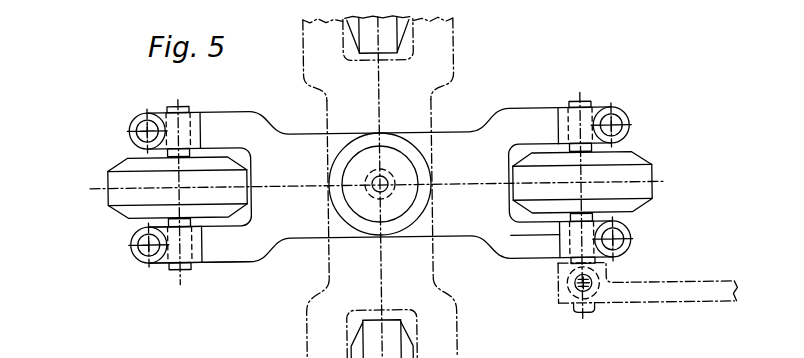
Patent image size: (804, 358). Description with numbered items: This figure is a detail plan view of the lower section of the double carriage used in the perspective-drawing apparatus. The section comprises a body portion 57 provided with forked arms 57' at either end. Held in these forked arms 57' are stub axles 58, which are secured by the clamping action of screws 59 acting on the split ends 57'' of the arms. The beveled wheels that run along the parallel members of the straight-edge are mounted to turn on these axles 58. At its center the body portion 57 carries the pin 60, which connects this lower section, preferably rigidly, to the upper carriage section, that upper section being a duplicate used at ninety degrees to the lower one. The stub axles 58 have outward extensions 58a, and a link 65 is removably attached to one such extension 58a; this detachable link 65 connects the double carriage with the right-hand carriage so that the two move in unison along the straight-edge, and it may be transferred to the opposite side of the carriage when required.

The body portion 57 is at (390, 185).
The forked arms 57' is at (381, 267).
The split ends 57'' is at (165, 263).
The stub axles 58 is at (184, 109).
The outward extensions of the axles 58a is at (585, 311).
The screws 59 is at (134, 124).
The pin 60 is at (386, 177).
The link 65 is at (667, 304).